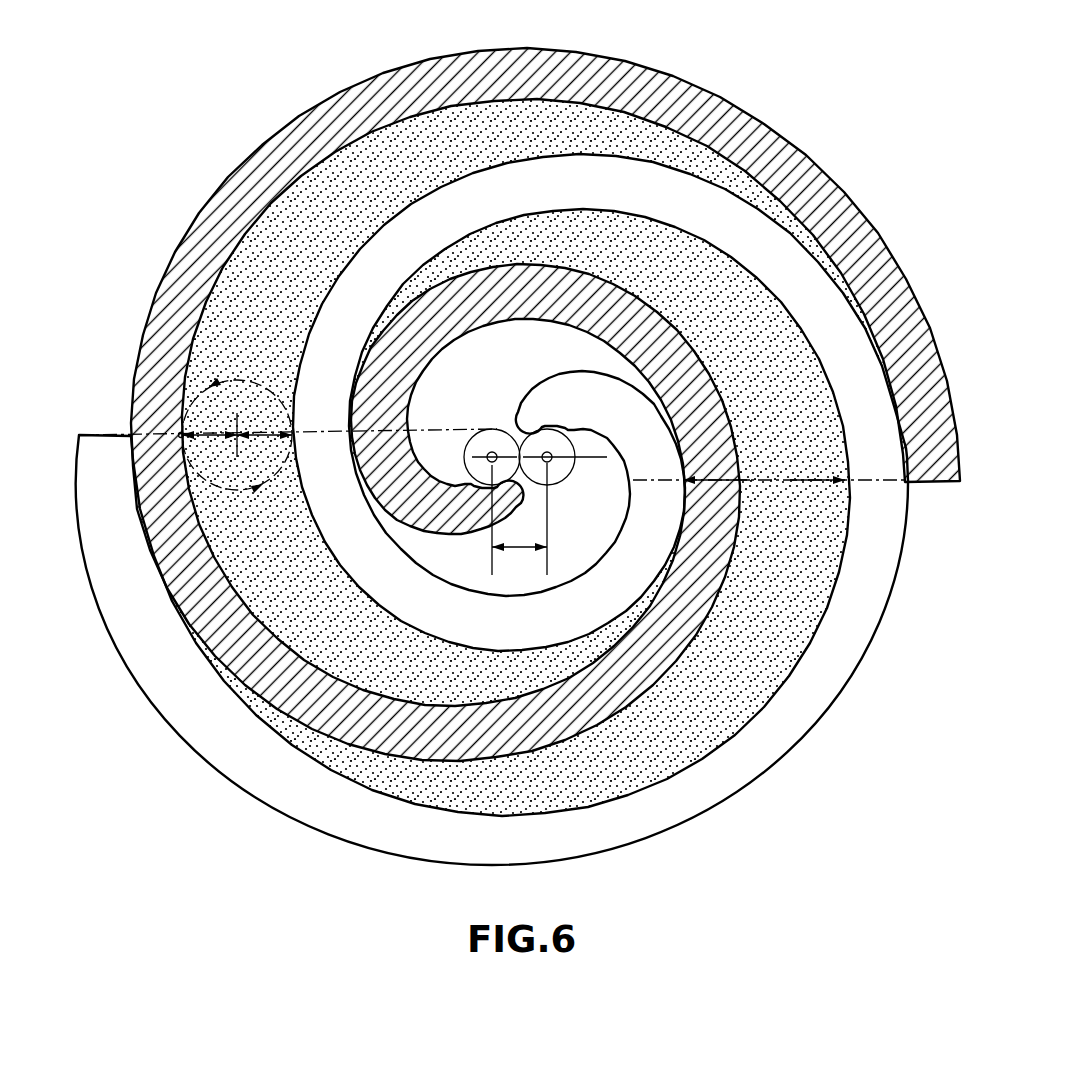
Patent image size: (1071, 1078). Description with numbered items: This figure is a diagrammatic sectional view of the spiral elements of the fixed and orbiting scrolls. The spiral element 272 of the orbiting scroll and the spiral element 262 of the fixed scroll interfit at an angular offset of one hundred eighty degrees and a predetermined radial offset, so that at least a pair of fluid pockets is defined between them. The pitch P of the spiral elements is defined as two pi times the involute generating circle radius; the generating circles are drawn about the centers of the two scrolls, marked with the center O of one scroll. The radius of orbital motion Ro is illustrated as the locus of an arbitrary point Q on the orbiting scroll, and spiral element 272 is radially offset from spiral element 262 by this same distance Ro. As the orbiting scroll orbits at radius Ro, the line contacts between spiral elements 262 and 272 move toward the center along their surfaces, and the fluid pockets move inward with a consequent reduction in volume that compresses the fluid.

The spiral element 272 is at (574, 70).
The spiral element 262 is at (787, 737).
The center of fixed scroll (O) and orbiting scroll (O') O is at (493, 450).
The radius of orbital motion Ro is at (218, 381).
The arbitrary point Q is at (180, 434).
The pitch P is at (769, 483).